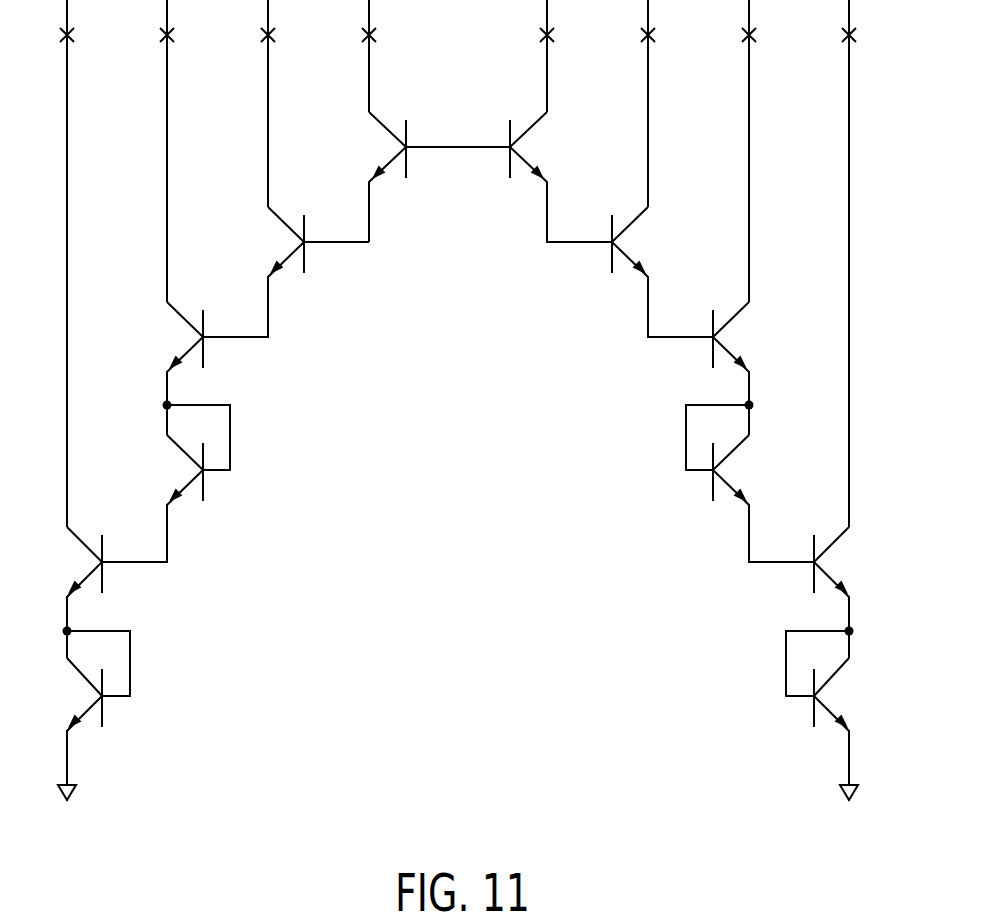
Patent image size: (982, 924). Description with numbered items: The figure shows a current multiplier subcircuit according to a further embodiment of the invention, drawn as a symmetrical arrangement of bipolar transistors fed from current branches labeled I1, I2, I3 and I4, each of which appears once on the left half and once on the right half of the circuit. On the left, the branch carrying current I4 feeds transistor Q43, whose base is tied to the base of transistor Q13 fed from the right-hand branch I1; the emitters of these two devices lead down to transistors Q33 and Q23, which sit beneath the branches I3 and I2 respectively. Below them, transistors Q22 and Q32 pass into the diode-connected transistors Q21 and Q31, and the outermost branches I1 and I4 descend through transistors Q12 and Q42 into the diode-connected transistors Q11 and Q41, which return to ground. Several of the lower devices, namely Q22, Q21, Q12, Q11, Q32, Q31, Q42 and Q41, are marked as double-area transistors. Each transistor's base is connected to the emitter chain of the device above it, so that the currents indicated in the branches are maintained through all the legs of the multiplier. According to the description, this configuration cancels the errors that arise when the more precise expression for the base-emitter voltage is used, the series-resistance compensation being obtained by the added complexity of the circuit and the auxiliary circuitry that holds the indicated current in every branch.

The current source I1 is at (321, 263).
The current source I2 is at (421, 151).
The current source I3 is at (522, 151).
The current source I4 is at (623, 263).
The transistor Q11 (diode-connected, x2) Q11 is at (71, 714).
The transistor Q12 (x2) Q12 is at (57, 590).
The transistor Q13 is at (561, 177).
The transistor Q21 (diode-connected, x2) Q21 is at (166, 482).
The transistor Q22 (x2) Q22 is at (158, 367).
The transistor Q23 is at (662, 272).
The transistor Q31 (diode-connected, x2) Q31 is at (750, 482).
The transistor Q32 (x2) Q32 is at (759, 367).
The transistor Q33 is at (286, 272).
The transistor Q41 (diode-connected, x2) Q41 is at (846, 714).
The transistor Q42 (x2) Q42 is at (860, 592).
The transistor Q43 is at (414, 177).